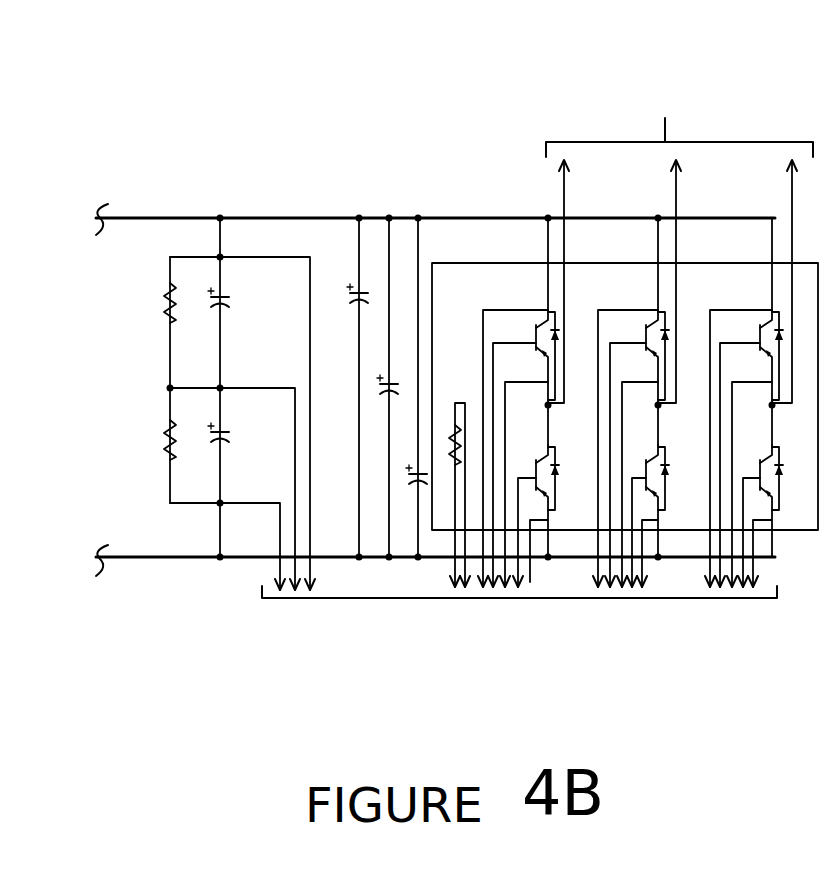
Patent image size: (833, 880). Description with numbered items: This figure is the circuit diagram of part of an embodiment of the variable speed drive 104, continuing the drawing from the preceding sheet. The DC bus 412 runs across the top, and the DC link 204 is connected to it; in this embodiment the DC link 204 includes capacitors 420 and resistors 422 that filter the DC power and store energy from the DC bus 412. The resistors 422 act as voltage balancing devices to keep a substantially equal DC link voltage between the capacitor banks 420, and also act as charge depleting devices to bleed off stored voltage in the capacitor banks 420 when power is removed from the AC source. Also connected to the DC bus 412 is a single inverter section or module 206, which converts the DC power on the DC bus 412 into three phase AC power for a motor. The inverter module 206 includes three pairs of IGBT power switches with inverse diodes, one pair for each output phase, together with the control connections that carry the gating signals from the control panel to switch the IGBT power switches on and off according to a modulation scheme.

The motor drive circuit 104 is at (310, 66).
The DC bus 412 is at (330, 217).
The capacitors 420 is at (236, 300).
The resistors 422 is at (165, 310).
The DC link 204 is at (160, 486).
The inverter section 206 is at (484, 300).